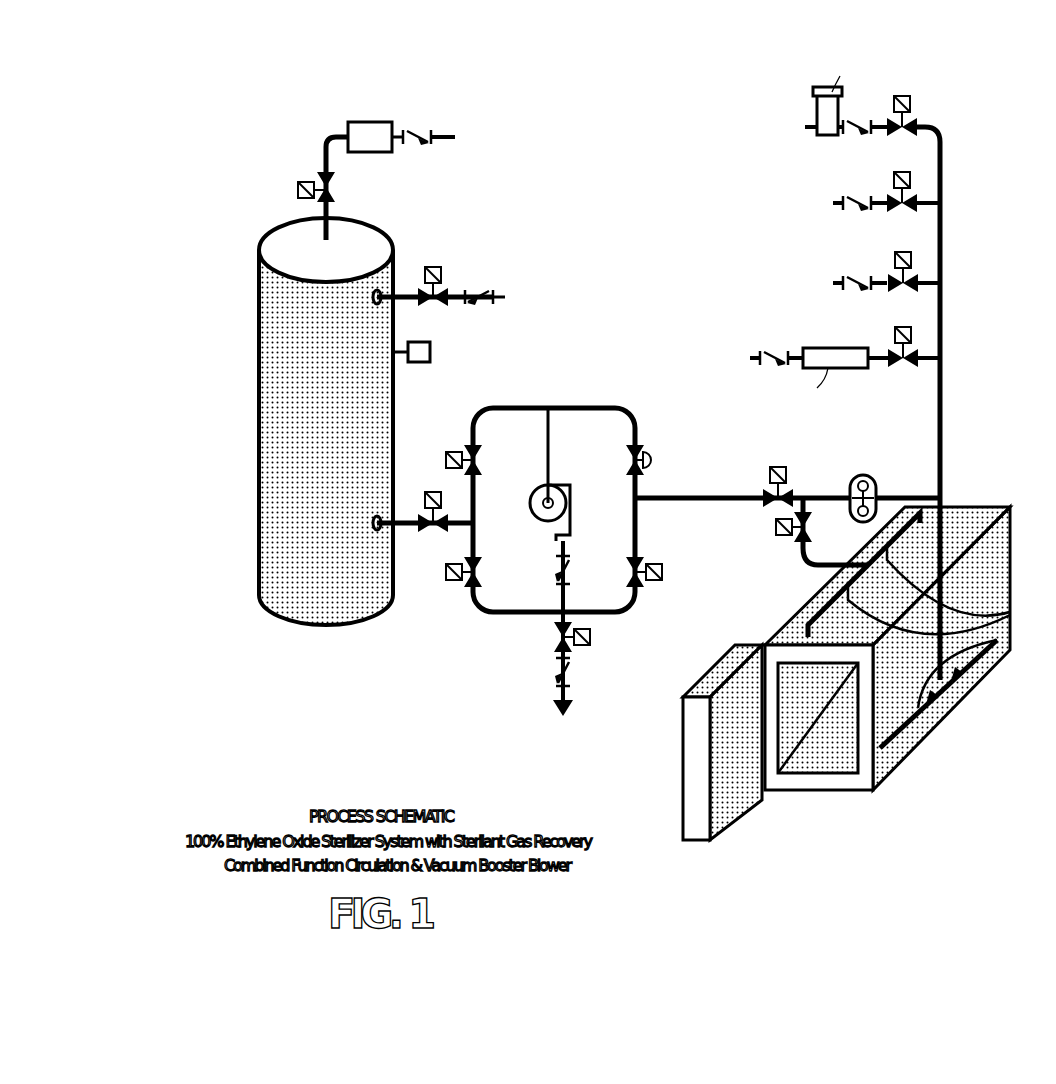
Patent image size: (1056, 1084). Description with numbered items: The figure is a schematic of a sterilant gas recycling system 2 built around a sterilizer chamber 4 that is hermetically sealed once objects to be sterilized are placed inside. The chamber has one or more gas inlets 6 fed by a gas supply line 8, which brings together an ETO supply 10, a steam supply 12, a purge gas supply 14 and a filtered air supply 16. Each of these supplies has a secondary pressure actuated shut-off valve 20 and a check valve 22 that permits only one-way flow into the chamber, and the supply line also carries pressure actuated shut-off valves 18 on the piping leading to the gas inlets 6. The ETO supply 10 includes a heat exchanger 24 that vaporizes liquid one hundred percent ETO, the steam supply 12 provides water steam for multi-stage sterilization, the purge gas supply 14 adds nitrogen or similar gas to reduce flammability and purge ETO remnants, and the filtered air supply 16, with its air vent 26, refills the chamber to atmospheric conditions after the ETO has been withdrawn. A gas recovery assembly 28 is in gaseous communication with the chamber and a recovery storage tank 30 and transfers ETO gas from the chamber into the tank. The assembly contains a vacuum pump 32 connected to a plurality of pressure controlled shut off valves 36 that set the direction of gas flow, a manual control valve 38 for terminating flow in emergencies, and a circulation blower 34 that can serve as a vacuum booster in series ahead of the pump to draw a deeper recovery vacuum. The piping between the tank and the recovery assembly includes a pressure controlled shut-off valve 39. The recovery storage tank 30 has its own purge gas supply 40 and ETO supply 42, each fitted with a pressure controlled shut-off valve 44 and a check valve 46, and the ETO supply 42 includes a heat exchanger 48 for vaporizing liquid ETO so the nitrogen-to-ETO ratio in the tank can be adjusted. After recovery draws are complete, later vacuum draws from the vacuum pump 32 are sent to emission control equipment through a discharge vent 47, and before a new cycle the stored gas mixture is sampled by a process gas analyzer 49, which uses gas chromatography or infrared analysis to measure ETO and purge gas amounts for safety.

The recycling system 2 is at (590, 86).
The sterilizer chamber 4 is at (1003, 502).
The gas inlets 6 is at (1012, 615).
The gas supply line 8 is at (945, 405).
The ETO supply 10 is at (752, 352).
The steam supply 12 is at (832, 277).
The purge gas supply 14 is at (830, 198).
The filtered air supply 16 is at (812, 108).
The pressure actuated shut-off valves 18 is at (776, 467).
The secondary pressure actuated shut-off valve 20 is at (918, 200).
The check valve 22 is at (855, 120).
The heat exchanger 24 is at (850, 368).
The air vent 26 is at (824, 88).
The gas recovery assembly 28 is at (596, 386).
The recovery storage tank 30 is at (405, 238).
The vacuum pump 32 is at (556, 486).
The circulation blower 34 is at (860, 522).
The pressure controlled shut off valves 36 is at (469, 445).
The manual control valve 38 is at (648, 460).
The pressure controlled shut-off valve 39 is at (430, 535).
The purge gas supply 40 is at (510, 265).
The ETO supply 42 is at (432, 150).
The pressure controlled shut-off valve 44 is at (330, 190).
The check valve 46 is at (436, 132).
The discharge vent 47 is at (552, 708).
The heat exchanger 48 is at (378, 152).
The process gas analyzer 49 is at (430, 348).